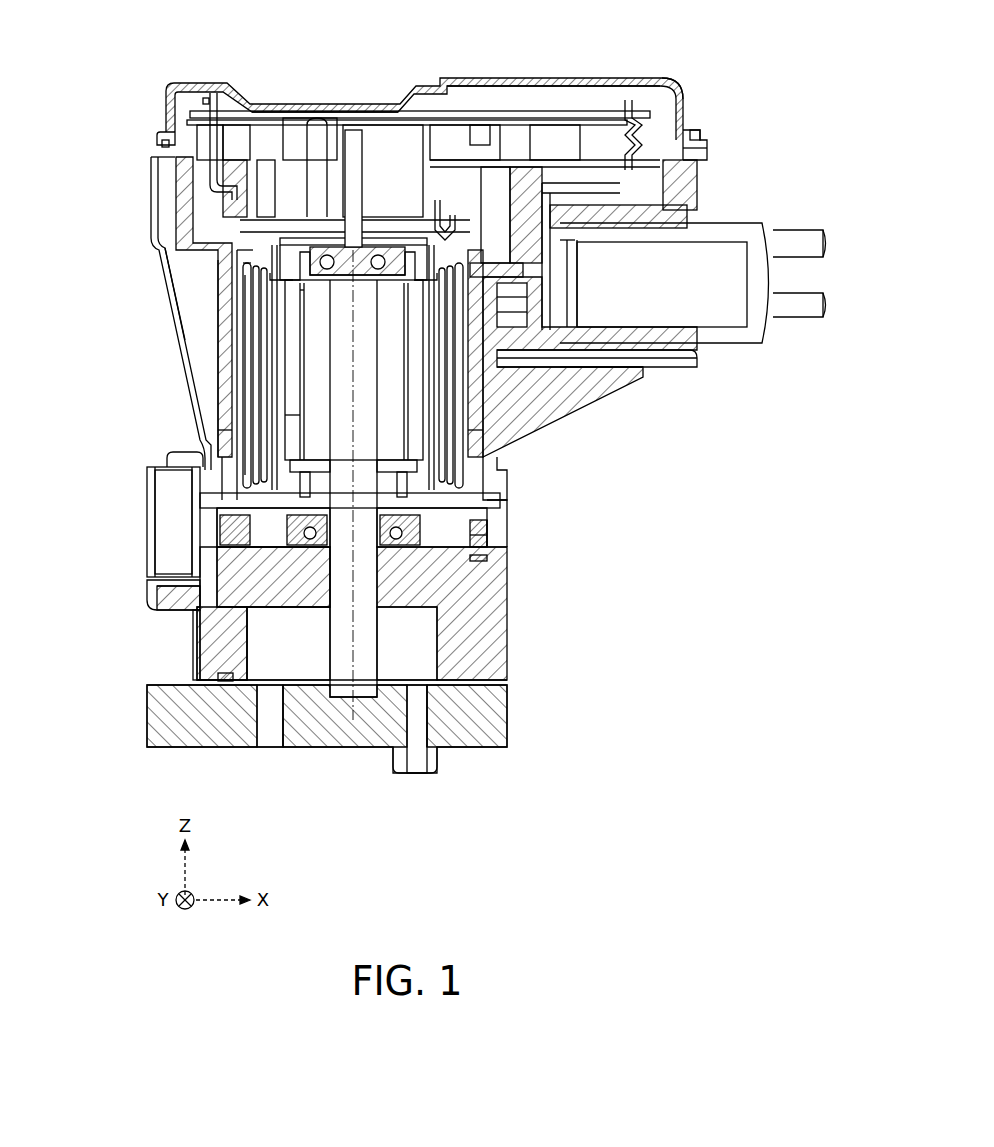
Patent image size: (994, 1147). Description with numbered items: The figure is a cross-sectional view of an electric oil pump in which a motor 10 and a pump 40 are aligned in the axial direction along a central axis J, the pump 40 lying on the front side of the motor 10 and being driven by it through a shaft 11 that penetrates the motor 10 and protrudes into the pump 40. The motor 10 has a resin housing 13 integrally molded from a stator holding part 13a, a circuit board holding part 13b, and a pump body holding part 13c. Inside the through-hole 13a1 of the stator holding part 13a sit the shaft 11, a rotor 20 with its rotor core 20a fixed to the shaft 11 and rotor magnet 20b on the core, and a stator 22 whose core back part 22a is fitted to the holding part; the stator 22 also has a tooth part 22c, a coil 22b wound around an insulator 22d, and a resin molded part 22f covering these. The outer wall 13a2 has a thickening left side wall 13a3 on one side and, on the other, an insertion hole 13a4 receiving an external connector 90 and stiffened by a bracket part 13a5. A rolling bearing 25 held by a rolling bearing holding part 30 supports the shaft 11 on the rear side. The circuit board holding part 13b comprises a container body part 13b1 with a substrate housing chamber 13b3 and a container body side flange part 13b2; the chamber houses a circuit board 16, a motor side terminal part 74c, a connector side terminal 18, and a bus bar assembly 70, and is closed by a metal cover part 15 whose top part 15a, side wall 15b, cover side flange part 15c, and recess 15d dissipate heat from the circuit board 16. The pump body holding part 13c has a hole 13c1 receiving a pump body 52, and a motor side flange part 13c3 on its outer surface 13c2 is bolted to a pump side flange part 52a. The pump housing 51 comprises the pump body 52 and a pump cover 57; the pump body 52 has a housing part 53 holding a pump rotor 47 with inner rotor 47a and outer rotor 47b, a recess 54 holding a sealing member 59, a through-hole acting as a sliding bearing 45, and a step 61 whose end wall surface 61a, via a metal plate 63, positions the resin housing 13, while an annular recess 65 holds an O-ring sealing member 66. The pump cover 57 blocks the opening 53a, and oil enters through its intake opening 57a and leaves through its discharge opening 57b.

The motor 10 is at (102, 222).
The shaft 11 is at (330, 398).
The resin housing 13 is at (145, 305).
The stator holding part 13a is at (190, 375).
The through-hole 13a1 is at (497, 460).
The outer wall 13a2 is at (168, 320).
The left side wall 13a3 is at (180, 283).
The insertion hole 13a4 is at (680, 356).
The bracket part 13a5 is at (615, 380).
The circuit board holding part 13b is at (716, 124).
The container body part 13b1 is at (180, 195).
The container body side flange part 13b2 is at (150, 134).
The substrate housing chamber 13b3 is at (367, 175).
The pump body holding part 13c is at (135, 526).
The hole 13c1 is at (488, 545).
The outer surface 13c2 is at (190, 495).
The motor side flange part 13c3 is at (161, 505).
The cover part 15 is at (590, 72).
The top part 15a is at (452, 78).
The side wall 15b is at (684, 110).
The cover side flange part 15c is at (702, 136).
The recess 15d is at (310, 104).
The circuit board 16 is at (518, 160).
The connector side terminal 18 is at (630, 115).
The rotor 20 is at (290, 355).
The rotor core 20a is at (310, 318).
The rotor magnet 20b is at (290, 415).
The stator 22 is at (198, 425).
The core back part 22a is at (225, 430).
The coil 22b is at (248, 262).
The tooth part 22c is at (245, 270).
The insulator (bobbin) 22d is at (168, 250).
The resin molded part 22f is at (485, 430).
The rolling bearing 25 is at (318, 195).
The rolling bearing holding part 30 is at (408, 228).
The pump 40 is at (108, 592).
The sliding bearing 45 is at (212, 600).
The pump rotor 47 is at (448, 666).
The inner rotor 47a is at (395, 680).
The outer rotor 47b is at (440, 720).
The pump housing 51 is at (538, 694).
The pump body 52 is at (507, 625).
The pump side flange part 52a is at (215, 610).
The housing part 53 is at (285, 630).
The opening 53a is at (315, 682).
The recess 54 is at (488, 572).
The pump cover 57 is at (500, 730).
The intake opening 57a is at (275, 732).
The discharge opening 57b is at (410, 772).
The sealing member 59 is at (230, 525).
The step 61 is at (300, 530).
The end wall surface 61a is at (500, 570).
The metal plate 63 is at (218, 578).
The annular recess 65 is at (484, 528).
The sealing member 66 is at (488, 535).
The bus bar assembly 70 is at (347, 111).
The motor side terminal part 74c is at (206, 96).
The external connector 90 is at (727, 300).
The central axis J is at (430, 637).